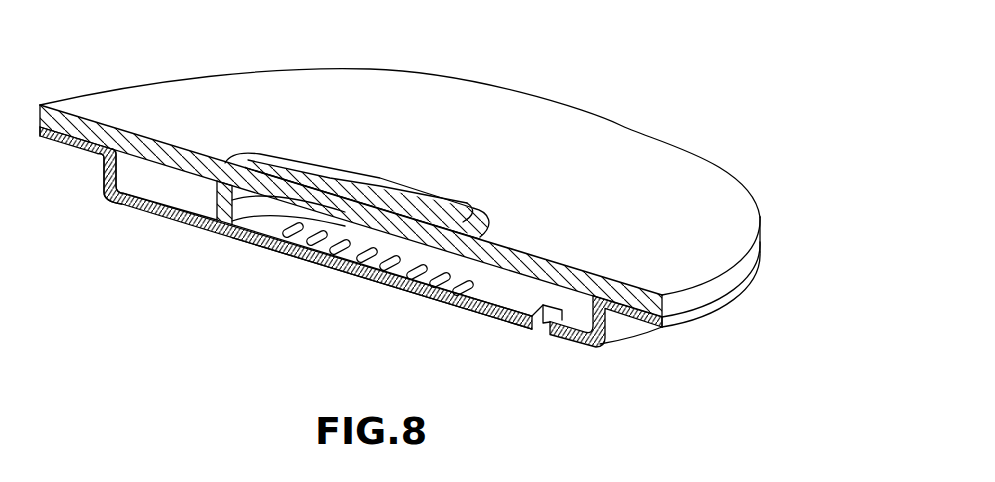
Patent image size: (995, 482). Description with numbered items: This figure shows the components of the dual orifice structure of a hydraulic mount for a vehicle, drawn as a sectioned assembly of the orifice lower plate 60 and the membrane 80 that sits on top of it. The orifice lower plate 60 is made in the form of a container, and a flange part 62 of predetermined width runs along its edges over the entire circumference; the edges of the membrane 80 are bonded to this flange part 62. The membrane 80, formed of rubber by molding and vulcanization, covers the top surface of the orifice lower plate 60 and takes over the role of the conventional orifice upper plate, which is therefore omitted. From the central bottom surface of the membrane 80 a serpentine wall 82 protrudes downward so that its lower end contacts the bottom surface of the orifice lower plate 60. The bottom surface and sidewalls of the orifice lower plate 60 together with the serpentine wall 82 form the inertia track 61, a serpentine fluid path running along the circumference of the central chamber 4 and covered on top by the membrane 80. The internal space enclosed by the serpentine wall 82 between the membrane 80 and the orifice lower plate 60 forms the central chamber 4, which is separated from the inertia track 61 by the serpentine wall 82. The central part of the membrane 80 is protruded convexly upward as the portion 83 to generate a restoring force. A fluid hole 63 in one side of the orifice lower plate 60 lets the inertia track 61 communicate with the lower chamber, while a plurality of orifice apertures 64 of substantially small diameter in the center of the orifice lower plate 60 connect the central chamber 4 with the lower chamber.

The membrane 80 is at (630, 121).
The convex central portion of the membrane 83 is at (395, 193).
The serpentine wall 82 is at (212, 230).
The inertia track 61 is at (167, 187).
The central chamber 4 is at (258, 228).
The orifice apertures 64 is at (368, 274).
The fluid hole 63 is at (540, 331).
The orifice lower plate 60 is at (614, 352).
The flange part 62 is at (683, 318).